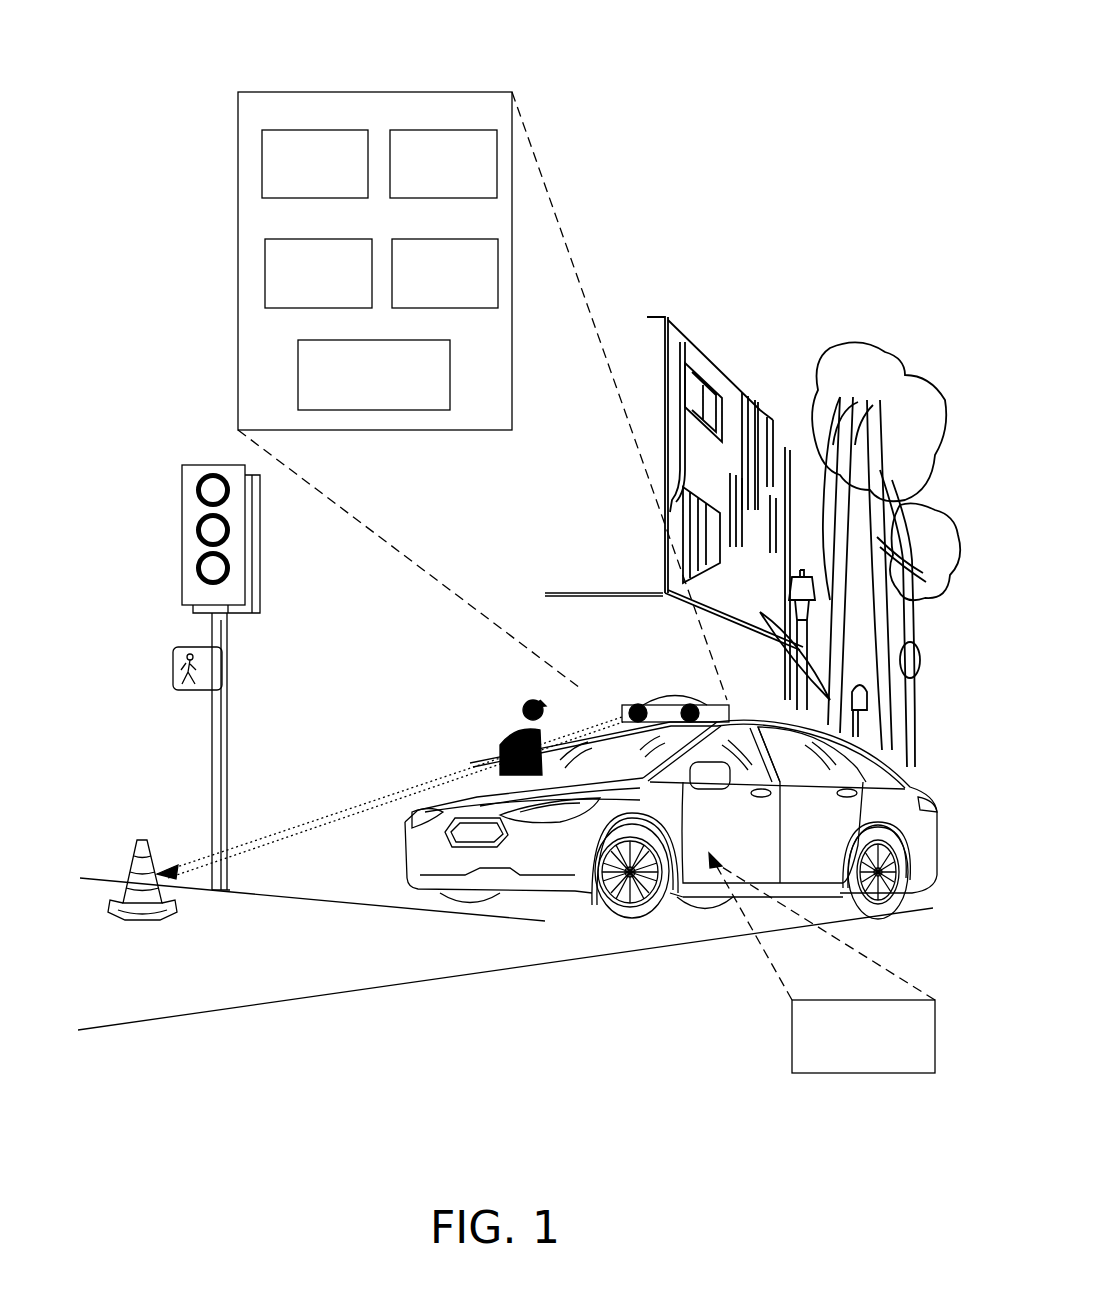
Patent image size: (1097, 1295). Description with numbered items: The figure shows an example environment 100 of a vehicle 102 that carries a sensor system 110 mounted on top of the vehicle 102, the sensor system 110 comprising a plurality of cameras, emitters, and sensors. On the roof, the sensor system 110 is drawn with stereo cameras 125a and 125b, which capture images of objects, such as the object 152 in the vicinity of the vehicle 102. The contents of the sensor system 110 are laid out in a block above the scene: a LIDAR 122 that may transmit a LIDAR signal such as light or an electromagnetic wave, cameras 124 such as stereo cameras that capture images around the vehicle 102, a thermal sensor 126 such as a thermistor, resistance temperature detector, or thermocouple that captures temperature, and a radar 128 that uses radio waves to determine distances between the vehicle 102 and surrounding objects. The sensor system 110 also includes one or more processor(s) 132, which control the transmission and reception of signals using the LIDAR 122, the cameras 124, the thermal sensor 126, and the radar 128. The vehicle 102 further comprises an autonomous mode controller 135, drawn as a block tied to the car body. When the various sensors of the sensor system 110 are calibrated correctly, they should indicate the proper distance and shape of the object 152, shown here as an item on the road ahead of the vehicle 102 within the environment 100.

The environment 100 is at (855, 29).
The vehicle 102 is at (410, 842).
The sensor system 110 is at (464, 92).
The LIDAR 122 is at (448, 130).
The cameras 124 is at (300, 130).
The stereo camera 125a is at (638, 703).
The stereo camera 125b is at (707, 707).
The thermal sensor 126 is at (314, 239).
The radar 128 is at (449, 239).
The processor(s) 132 is at (392, 340).
The autonomous mode controller 135 is at (793, 1030).
The object 152 is at (130, 917).